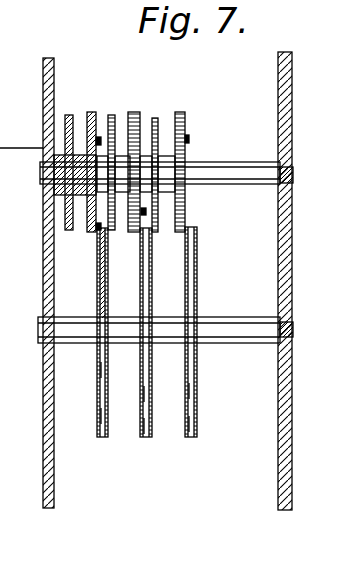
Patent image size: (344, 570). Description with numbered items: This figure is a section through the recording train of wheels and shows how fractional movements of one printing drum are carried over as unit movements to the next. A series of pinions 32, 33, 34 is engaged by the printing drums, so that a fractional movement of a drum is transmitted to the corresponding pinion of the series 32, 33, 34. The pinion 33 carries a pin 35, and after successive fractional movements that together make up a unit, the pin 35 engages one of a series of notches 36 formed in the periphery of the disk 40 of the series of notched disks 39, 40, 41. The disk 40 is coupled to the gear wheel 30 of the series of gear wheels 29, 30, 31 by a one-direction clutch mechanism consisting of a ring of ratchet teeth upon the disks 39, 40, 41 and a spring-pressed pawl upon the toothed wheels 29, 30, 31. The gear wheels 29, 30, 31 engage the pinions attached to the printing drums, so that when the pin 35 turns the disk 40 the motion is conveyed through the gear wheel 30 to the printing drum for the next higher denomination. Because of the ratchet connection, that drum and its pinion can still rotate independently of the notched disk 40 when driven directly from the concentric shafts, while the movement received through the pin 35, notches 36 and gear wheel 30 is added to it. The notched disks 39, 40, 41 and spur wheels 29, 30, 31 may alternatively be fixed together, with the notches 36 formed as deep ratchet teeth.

The gear wheel 29 is at (103, 438).
The gear wheel 30 is at (146, 438).
The gear wheel 31 is at (191, 438).
The pinion 32 is at (68, 115).
The pinion 33 is at (112, 115).
The pinion 34 is at (155, 118).
The pin 35 is at (189, 139).
The notches 36 is at (97, 370).
The notched disk 39 is at (97, 415).
The notched disk 40 is at (140, 426).
The notched disk 41 is at (185, 424).